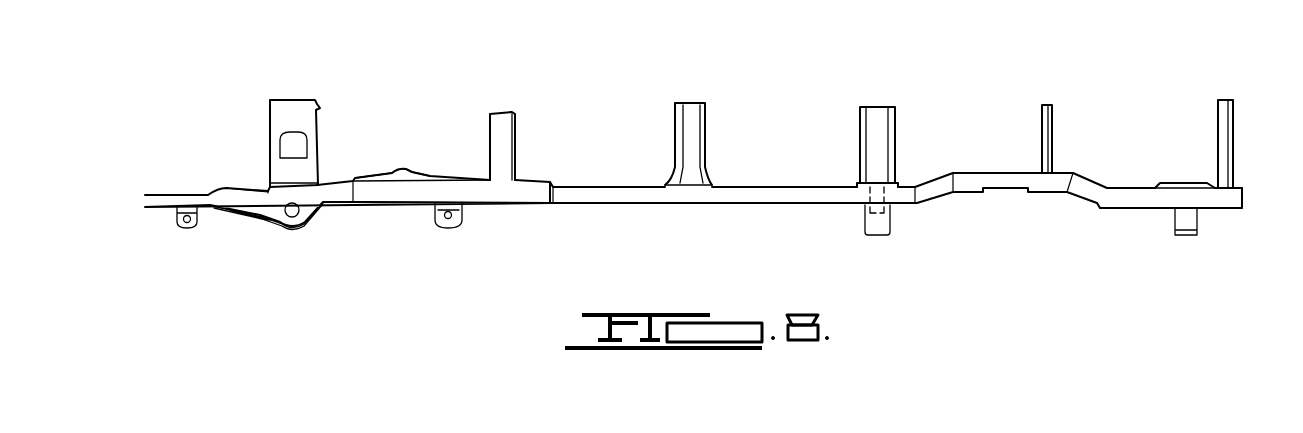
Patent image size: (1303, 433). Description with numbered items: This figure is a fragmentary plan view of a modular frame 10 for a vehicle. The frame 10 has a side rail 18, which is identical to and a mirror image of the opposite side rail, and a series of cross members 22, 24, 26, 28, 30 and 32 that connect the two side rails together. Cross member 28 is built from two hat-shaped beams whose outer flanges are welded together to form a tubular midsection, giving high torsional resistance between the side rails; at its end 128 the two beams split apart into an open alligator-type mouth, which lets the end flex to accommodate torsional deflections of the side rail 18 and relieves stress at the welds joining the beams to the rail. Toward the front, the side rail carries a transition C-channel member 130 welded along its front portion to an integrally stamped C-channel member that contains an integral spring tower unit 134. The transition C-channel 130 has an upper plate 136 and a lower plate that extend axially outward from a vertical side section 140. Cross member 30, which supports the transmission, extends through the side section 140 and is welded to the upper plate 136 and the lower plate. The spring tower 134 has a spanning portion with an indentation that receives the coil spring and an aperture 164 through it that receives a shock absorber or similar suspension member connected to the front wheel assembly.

The modular frame 10 is at (638, 145).
The side rail 18 is at (1259, 196).
The cross member 22 is at (1226, 103).
The cross member 24 is at (1050, 120).
The cross member 26 is at (877, 115).
The cross member 28 is at (690, 105).
The cross member 30 is at (515, 142).
The cross member 32 is at (292, 105).
The end of cross member 128 is at (690, 178).
The transition C-channel member 130 is at (490, 202).
The integral spring tower unit 134 is at (276, 213).
The upper plate 136 is at (448, 185).
The vertical side section 140 is at (420, 176).
The aperture 164 is at (305, 225).